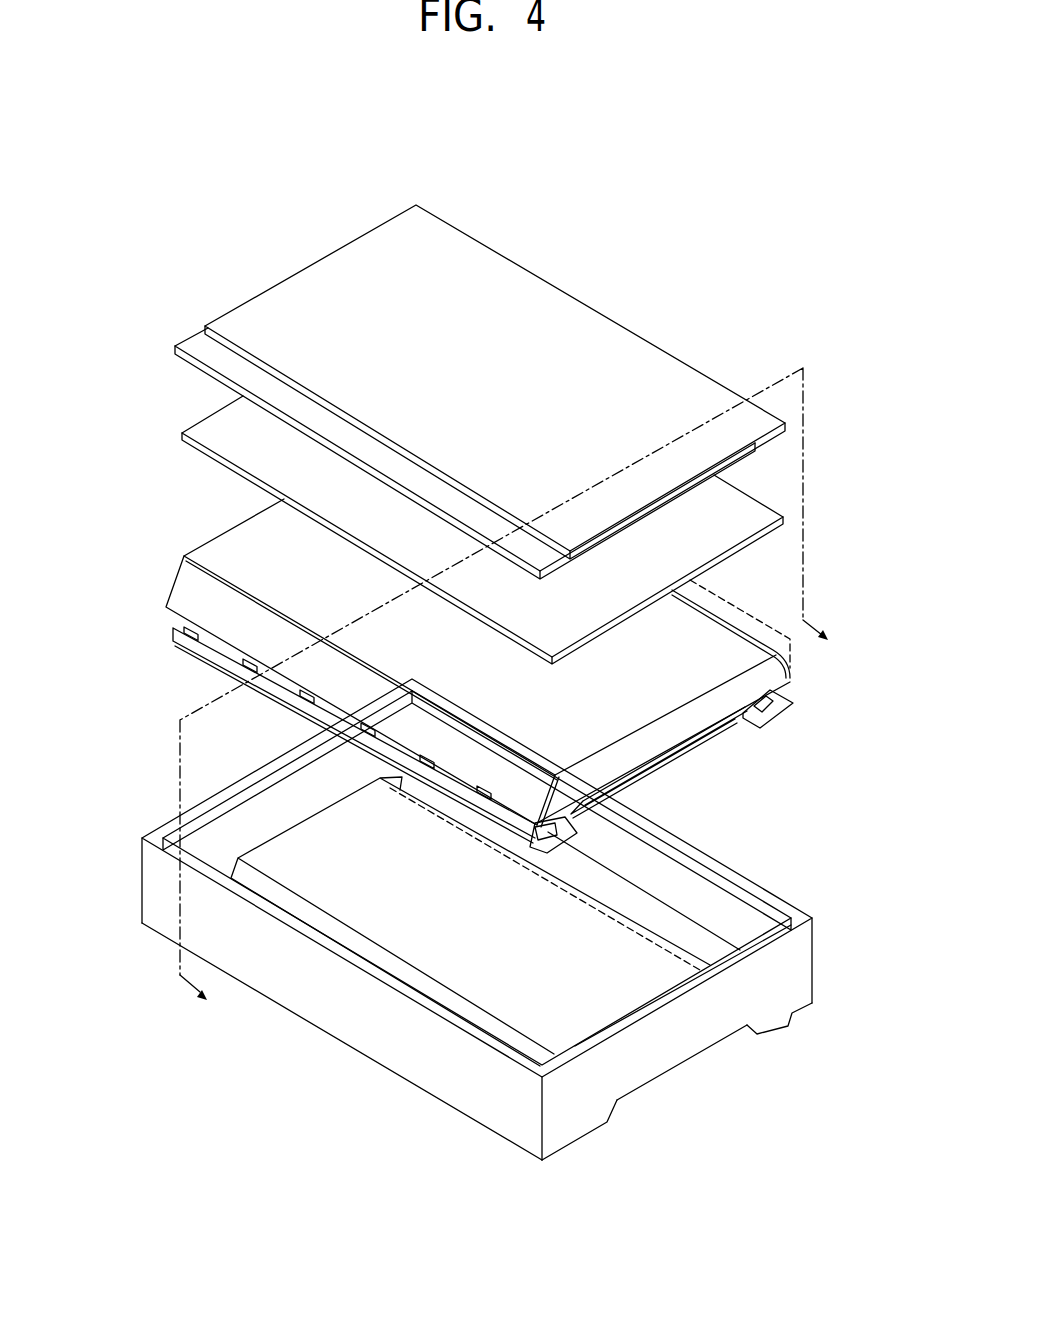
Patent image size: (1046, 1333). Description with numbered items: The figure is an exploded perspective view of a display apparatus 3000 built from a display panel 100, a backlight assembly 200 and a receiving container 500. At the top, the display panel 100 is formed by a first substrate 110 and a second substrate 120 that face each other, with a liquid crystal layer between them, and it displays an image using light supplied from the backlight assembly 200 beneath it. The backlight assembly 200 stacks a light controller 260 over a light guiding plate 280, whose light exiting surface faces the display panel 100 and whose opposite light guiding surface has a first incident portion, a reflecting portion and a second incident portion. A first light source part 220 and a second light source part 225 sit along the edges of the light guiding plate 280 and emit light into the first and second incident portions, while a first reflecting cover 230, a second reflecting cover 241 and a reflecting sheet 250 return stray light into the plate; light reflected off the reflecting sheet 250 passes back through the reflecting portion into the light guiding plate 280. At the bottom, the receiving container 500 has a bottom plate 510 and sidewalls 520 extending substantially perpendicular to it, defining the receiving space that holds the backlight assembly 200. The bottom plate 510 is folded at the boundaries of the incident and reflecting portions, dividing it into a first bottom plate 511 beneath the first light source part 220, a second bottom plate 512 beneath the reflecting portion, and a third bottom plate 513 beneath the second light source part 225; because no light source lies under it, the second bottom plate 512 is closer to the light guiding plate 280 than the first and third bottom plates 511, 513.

The display apparatus 3000 is at (458, 182).
The display panel 100 is at (104, 312).
The second substrate 120 is at (205, 327).
The first substrate 110 is at (175, 347).
The backlight assembly 200 is at (106, 437).
The light controller 260 is at (182, 436).
The light guiding plate 280 is at (257, 528).
The second reflecting cover 241 is at (775, 660).
The first reflecting cover 230 is at (173, 592).
The reflecting sheet 250 is at (740, 710).
The first light source part 220 is at (160, 640).
The second light source part 225 is at (743, 722).
The receiving container 500 is at (716, 1181).
The bottom plate 510 is at (806, 1083).
The first bottom plate 511 is at (578, 1140).
The second bottom plate 512 is at (687, 1062).
The third bottom plate 513 is at (790, 1028).
The sidewalls 520 is at (520, 1137).